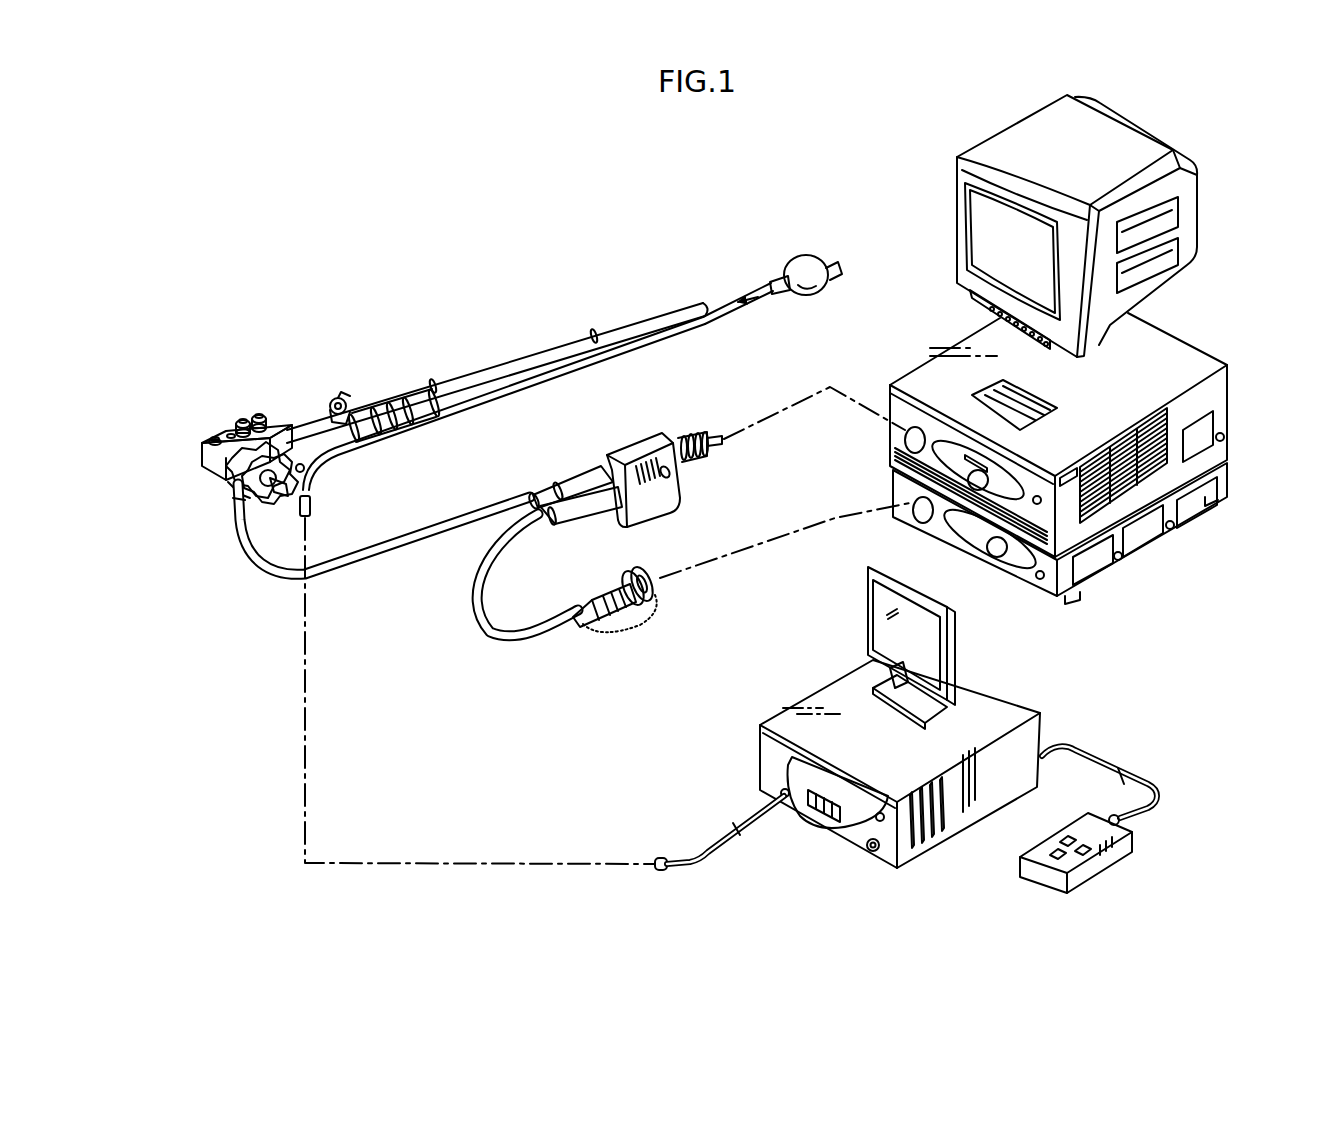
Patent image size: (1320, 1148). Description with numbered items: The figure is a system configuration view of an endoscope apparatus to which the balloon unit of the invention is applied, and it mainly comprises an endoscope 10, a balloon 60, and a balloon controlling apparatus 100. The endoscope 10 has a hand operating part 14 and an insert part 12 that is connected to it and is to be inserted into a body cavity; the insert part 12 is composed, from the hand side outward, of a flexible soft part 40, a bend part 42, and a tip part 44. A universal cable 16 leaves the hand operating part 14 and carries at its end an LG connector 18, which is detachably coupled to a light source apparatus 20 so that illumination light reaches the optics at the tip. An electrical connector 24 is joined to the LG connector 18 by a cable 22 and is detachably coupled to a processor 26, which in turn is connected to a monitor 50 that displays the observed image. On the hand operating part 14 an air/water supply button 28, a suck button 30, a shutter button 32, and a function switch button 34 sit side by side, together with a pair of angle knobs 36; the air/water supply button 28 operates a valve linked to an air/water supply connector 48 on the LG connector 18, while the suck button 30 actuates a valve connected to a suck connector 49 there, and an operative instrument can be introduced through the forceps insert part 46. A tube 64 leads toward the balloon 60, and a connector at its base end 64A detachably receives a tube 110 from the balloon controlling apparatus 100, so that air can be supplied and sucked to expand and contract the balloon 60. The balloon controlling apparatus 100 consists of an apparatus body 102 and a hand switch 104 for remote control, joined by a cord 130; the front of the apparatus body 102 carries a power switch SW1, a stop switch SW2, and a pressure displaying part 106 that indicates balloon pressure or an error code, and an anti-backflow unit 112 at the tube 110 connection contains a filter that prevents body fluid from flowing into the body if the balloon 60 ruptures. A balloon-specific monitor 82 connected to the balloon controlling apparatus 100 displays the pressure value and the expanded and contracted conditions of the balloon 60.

The endoscope 10 is at (405, 270).
The insert part 12 is at (513, 340).
The hand operating part 14 is at (305, 410).
The universal cable 16 is at (385, 553).
The LG connector 18 is at (607, 450).
The light source apparatus 20 is at (893, 397).
The cable 22 is at (480, 583).
The electrical connector 24 is at (598, 587).
The processor 26 is at (893, 492).
The air/water supply button 28 is at (258, 417).
The suck button 30 is at (241, 420).
The shutter button 32 is at (228, 433).
The function switch button 34 is at (212, 440).
The angle knobs 36 is at (308, 462).
The soft part 40 is at (580, 342).
The bend part 42 is at (650, 318).
The tip part 44 is at (703, 305).
The forceps insert part 46 is at (345, 400).
The air/water supply connector 48 is at (680, 445).
The suck connector 49 is at (672, 478).
The monitor 50 is at (950, 200).
The balloon 60 is at (812, 256).
The tube 64 is at (478, 405).
The end on a base end side of the tube 64A is at (312, 507).
The balloon-specific monitor 82 is at (930, 632).
The balloon controlling apparatus 100 is at (843, 640).
The apparatus body 102 is at (810, 700).
The hand switch 104 is at (1135, 845).
The pressure displaying part 106 is at (830, 820).
The tube 110 is at (690, 862).
The anti-backflow unit 112 is at (788, 803).
The cord 130 is at (1098, 758).
The power switch SW1 is at (912, 842).
The stop switch SW2 is at (881, 814).